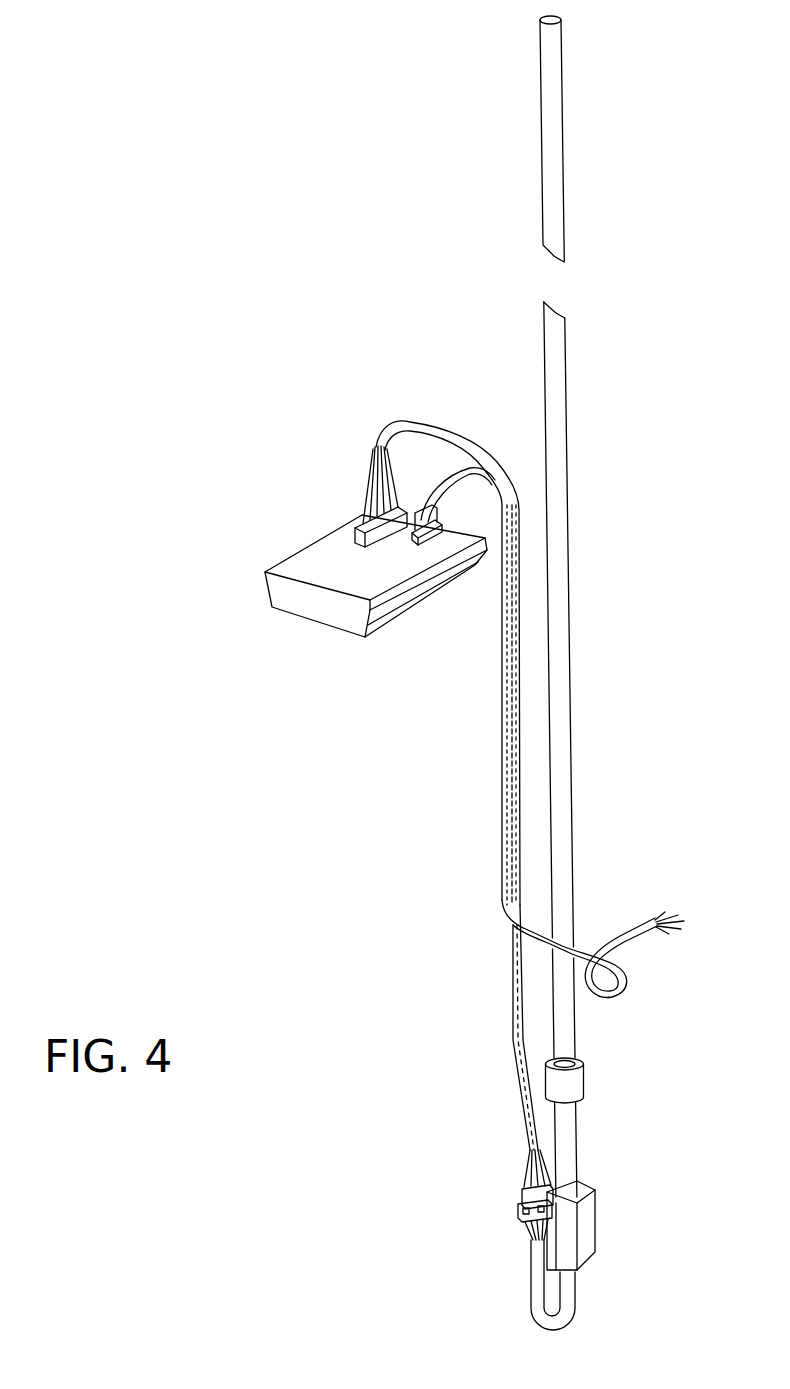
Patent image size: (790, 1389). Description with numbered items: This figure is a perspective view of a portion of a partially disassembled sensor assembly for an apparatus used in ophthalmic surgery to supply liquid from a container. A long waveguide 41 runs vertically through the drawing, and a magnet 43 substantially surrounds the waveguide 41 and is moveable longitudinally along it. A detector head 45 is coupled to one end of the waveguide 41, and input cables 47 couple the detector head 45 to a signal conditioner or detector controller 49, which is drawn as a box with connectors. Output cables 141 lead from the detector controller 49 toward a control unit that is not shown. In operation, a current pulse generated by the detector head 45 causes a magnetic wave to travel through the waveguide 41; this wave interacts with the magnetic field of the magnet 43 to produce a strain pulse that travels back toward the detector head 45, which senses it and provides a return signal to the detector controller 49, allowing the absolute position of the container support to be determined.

The waveguide 41 is at (562, 676).
The magnet 43 is at (583, 1093).
The detector head 45 is at (578, 1233).
The input cables 47 is at (527, 1130).
The detector controller 49 is at (275, 583).
The output cables 141 is at (378, 438).